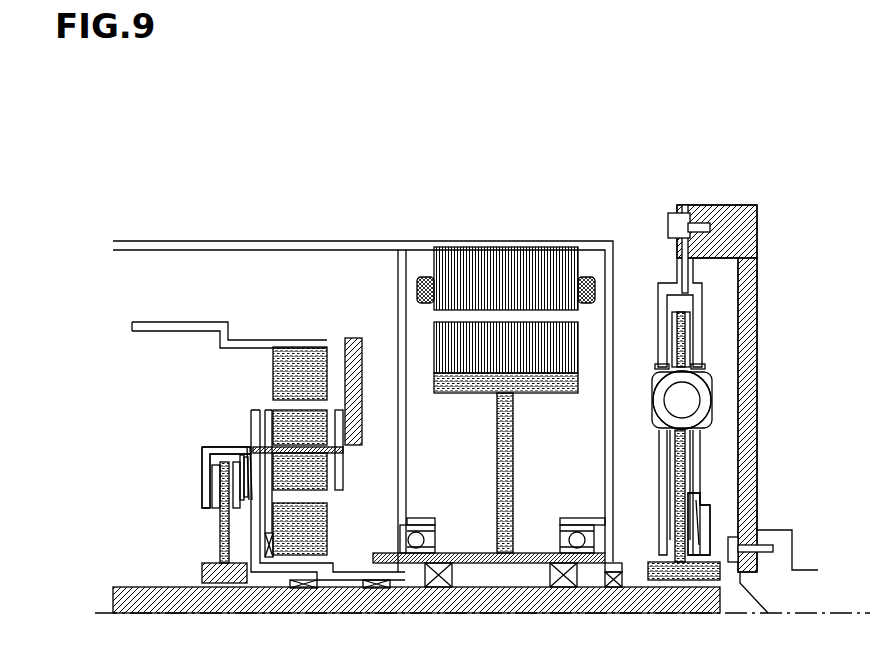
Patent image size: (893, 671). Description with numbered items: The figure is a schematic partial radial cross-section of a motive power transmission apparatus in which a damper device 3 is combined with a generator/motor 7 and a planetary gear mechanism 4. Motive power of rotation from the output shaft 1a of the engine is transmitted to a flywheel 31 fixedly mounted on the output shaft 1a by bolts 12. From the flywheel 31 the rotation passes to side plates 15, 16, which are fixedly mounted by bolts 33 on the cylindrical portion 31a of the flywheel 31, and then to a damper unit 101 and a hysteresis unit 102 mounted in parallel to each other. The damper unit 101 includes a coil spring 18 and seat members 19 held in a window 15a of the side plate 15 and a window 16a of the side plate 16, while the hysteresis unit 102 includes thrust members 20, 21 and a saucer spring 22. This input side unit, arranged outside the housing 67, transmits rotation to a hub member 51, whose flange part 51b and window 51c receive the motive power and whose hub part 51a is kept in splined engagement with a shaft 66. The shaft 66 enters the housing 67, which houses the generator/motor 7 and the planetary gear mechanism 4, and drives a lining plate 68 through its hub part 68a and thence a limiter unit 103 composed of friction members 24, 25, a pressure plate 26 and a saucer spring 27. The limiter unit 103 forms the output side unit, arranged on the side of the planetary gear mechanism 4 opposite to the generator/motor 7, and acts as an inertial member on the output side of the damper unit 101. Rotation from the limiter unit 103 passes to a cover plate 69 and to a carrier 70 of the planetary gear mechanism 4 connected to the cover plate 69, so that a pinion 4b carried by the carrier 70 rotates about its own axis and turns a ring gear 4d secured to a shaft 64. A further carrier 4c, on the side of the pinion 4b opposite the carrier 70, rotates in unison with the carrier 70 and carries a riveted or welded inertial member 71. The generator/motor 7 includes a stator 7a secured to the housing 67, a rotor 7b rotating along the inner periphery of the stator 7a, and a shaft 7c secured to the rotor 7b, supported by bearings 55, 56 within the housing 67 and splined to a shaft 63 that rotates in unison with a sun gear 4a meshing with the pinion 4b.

The output shaft 1a is at (805, 575).
The damper device 3 is at (792, 245).
The planetary gear mechanism 4 is at (300, 417).
The sun gear 4a is at (320, 516).
The pinion 4b is at (268, 410).
The carrier 4c is at (342, 478).
The ring gear 4d is at (321, 362).
The generator/motor 7 is at (497, 388).
The stator 7a is at (511, 265).
The rotor 7b is at (463, 373).
The shaft 7c is at (513, 447).
The bolt 12 is at (768, 544).
The side plate 15 is at (700, 309).
The window 15a is at (701, 367).
The side plate 16 is at (658, 310).
The window 16a is at (657, 367).
The coil spring 18 is at (655, 402).
The seat member 19 is at (716, 392).
The thrust member 20 is at (663, 515).
The thrust member 21 is at (692, 505).
The saucer spring 22 is at (700, 535).
The friction member 24 is at (212, 489).
The friction member 25 is at (241, 460).
The pressure plate 26 is at (245, 452).
The saucer spring 27 is at (250, 446).
The flywheel 31 is at (757, 330).
The cylindrical portion 31a is at (722, 204).
The bolt 33 is at (669, 225).
The hub member 51 is at (708, 479).
The hub part 51a is at (651, 559).
The flange part 51b is at (684, 463).
The window 51c is at (686, 434).
The bearing 55 is at (578, 535).
The bearing 56 is at (415, 522).
The shaft 63 is at (349, 575).
The shaft 64 is at (191, 323).
The shaft 66 is at (498, 613).
The housing 67 is at (300, 243).
The lining plate 68 is at (220, 527).
The hub part 68a is at (202, 575).
The cover plate 69 is at (206, 467).
The carrier 70 is at (268, 412).
The inertial member 71 is at (362, 371).
The damper unit 101 is at (726, 410).
The hysteresis unit 102 is at (728, 496).
The limiter unit 103 is at (190, 477).